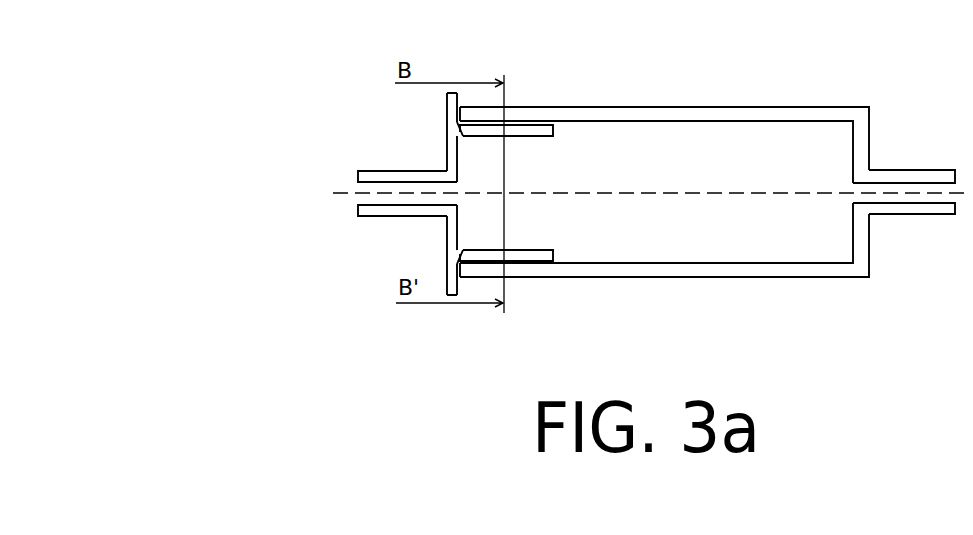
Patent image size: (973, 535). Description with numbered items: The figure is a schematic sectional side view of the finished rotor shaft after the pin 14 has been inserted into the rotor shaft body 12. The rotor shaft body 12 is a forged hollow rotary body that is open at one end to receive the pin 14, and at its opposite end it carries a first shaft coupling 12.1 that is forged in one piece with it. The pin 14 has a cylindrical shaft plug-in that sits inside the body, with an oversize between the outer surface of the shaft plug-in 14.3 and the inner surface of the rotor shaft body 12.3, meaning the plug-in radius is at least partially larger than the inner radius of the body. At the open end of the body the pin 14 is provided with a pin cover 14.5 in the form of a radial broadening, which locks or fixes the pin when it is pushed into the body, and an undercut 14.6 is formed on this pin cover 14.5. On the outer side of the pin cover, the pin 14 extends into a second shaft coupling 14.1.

The rotor shaft body 12 is at (707, 158).
The first shaft coupling 12.1 is at (885, 177).
The inner surface of the rotor shaft body 12.3 is at (620, 262).
The pin 14 is at (455, 196).
The second shaft coupling 14.1 is at (372, 212).
The outer surface of the shaft plug-in 14.3 is at (540, 257).
The pin cover 14.5 is at (543, 303).
The undercut 14.6 is at (462, 132).